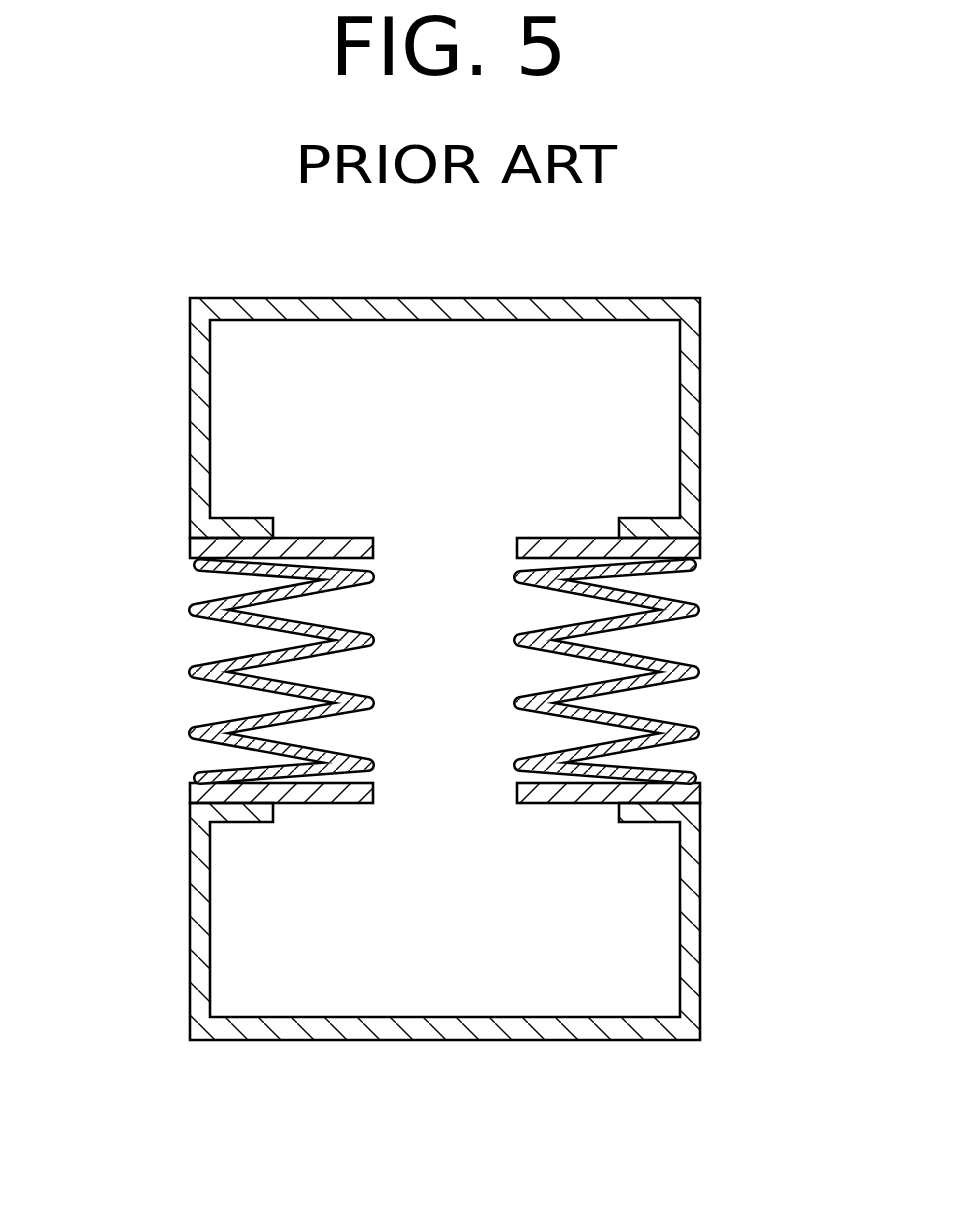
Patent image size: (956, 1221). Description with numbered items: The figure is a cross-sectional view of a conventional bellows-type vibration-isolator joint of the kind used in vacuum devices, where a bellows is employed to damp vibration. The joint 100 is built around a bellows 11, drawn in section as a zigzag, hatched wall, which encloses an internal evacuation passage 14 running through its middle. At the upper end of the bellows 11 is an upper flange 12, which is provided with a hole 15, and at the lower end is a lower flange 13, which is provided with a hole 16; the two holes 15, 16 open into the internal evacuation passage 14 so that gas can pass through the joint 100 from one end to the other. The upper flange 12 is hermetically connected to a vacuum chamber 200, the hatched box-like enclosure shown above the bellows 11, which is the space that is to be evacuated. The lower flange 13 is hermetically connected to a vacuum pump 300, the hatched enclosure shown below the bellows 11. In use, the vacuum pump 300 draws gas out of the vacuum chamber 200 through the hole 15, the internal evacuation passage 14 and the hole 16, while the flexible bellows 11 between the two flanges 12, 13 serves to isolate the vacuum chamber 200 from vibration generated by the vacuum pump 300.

The joint 100 is at (722, 560).
The vacuum chamber 200 is at (700, 424).
The vacuum pump 300 is at (700, 918).
The bellows 11 is at (190, 603).
The upper flange 12 is at (376, 548).
The lower flange 13 is at (374, 799).
The internal evacuation passage 14 is at (465, 647).
The hole 15 is at (476, 565).
The hole 16 is at (443, 788).